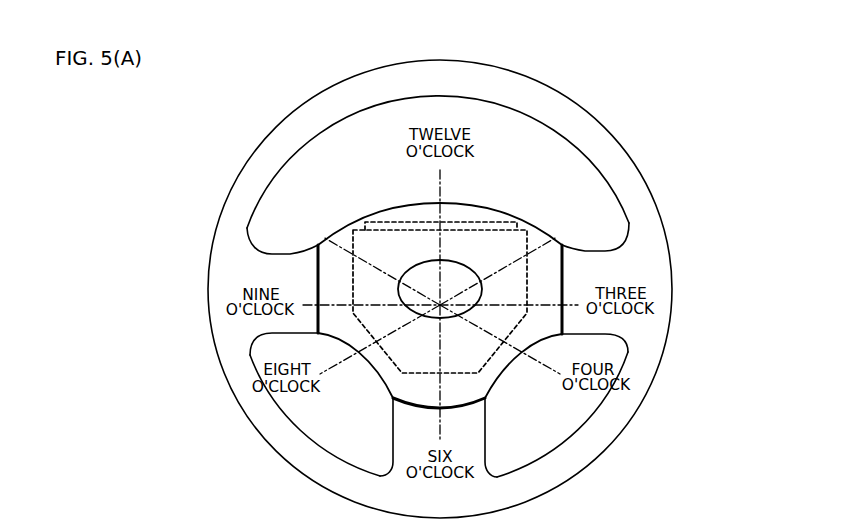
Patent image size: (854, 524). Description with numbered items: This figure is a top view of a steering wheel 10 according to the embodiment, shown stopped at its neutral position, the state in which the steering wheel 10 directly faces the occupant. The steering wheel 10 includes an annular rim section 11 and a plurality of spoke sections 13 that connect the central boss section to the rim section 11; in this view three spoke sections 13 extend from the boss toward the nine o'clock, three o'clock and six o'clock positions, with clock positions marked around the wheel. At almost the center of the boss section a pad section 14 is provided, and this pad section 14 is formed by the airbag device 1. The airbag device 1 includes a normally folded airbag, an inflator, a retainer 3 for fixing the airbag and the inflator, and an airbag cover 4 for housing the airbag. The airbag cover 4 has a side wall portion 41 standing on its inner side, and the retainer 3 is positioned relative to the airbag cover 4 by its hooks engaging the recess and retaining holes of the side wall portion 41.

The steering wheel 10 is at (648, 84).
The rim section 11 is at (440, 58).
The spoke sections 13 is at (288, 253).
The airbag device 1 is at (525, 204).
The retainer 3 is at (390, 364).
The airbag cover 4 is at (477, 212).
The pad section 14 is at (381, 212).
The side wall portion 41 is at (418, 218).